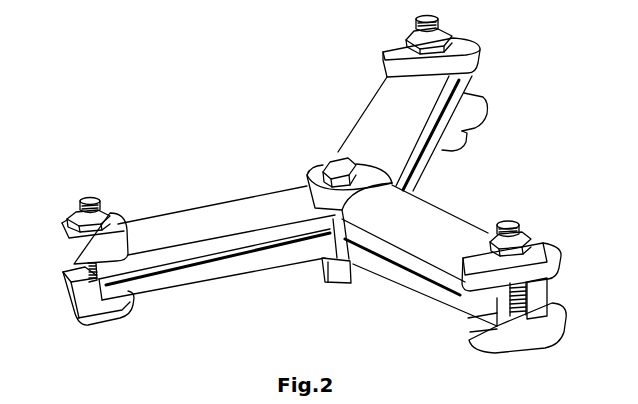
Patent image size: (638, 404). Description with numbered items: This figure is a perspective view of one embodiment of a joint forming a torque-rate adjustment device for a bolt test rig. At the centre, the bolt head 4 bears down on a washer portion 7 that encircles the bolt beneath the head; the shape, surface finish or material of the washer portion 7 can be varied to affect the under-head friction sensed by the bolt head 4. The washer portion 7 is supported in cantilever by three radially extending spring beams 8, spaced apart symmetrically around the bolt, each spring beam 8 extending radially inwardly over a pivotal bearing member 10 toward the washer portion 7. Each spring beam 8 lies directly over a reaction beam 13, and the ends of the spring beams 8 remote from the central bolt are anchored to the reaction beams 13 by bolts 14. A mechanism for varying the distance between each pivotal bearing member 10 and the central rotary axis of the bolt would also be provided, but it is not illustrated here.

The bolt head 4 is at (338, 160).
The washer portion 7 is at (365, 198).
The spring beam 8 is at (205, 210).
The pivotal bearing member 10 is at (267, 251).
The reaction beam 13 is at (183, 277).
The bolt 14 is at (85, 200).